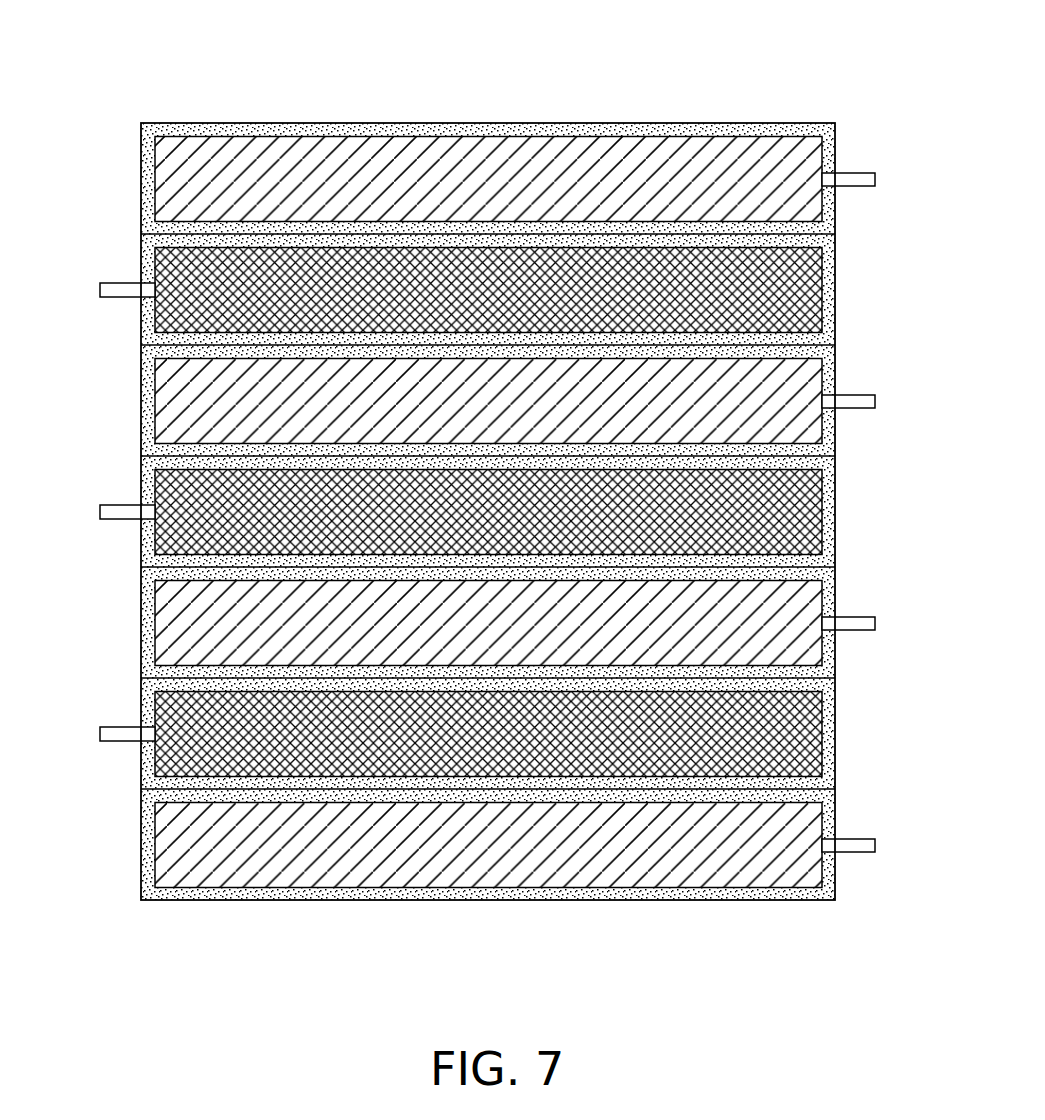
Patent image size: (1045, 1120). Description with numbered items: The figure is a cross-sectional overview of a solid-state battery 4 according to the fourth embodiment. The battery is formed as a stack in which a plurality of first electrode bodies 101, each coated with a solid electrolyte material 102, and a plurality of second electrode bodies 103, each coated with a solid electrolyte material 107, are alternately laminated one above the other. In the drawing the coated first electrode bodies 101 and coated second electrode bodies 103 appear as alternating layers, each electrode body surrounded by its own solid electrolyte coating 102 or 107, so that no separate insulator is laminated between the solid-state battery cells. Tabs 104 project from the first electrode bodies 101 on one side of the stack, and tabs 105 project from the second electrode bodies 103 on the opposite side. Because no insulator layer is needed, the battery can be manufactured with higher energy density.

The solid-state battery 4 is at (766, 63).
The first electrode body 101 is at (822, 287).
The solid electrolyte material 102 is at (835, 247).
The second electrode body 103 is at (822, 163).
The positive electrode current collector tab 104 is at (128, 296).
The negative electrode current collector tab 105 is at (848, 187).
The solid electrolyte material 107 is at (838, 128).